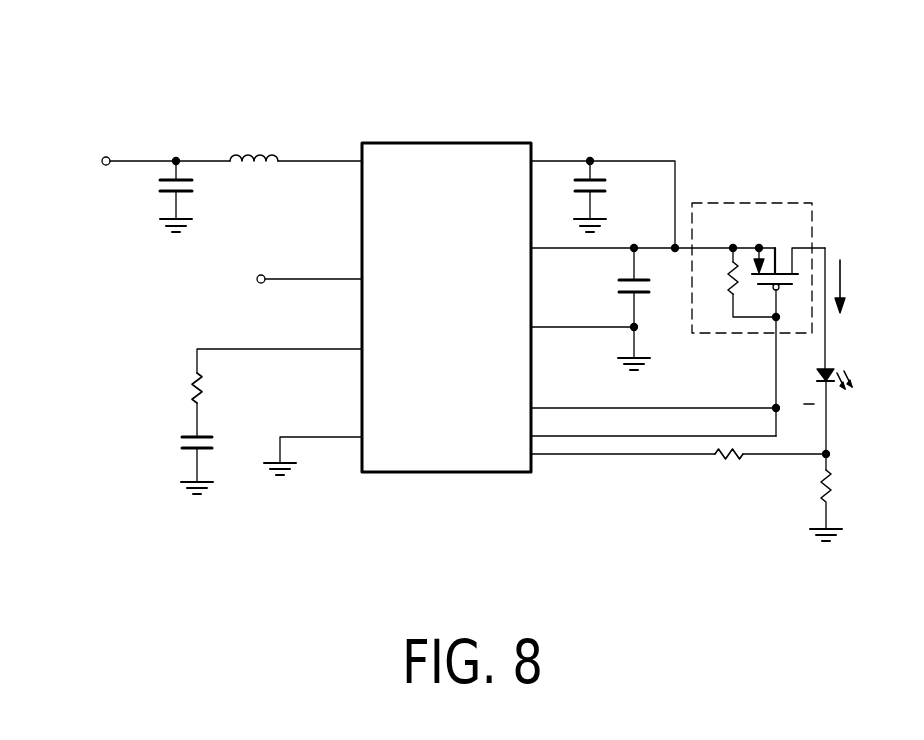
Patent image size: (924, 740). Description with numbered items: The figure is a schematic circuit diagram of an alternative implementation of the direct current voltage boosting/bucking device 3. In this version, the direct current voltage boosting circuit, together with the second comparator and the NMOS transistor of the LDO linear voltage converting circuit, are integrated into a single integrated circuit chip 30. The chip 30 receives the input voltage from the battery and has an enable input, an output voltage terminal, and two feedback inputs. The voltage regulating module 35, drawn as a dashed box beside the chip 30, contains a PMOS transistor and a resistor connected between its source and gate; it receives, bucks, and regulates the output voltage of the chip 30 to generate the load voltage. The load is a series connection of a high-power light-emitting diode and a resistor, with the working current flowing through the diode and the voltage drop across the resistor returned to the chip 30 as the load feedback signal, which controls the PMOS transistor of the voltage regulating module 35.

The direct current voltage boosting/bucking device 3 is at (615, 108).
The integrated circuit chip 30 is at (447, 143).
The voltage regulating module 35 is at (813, 225).